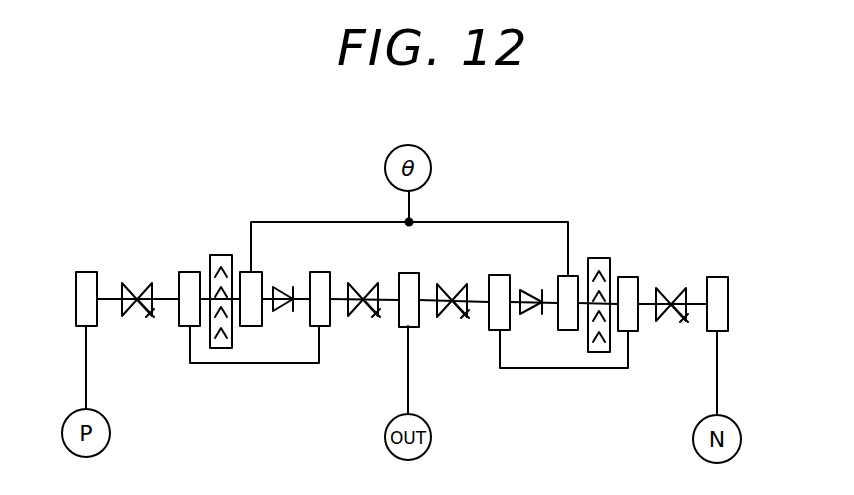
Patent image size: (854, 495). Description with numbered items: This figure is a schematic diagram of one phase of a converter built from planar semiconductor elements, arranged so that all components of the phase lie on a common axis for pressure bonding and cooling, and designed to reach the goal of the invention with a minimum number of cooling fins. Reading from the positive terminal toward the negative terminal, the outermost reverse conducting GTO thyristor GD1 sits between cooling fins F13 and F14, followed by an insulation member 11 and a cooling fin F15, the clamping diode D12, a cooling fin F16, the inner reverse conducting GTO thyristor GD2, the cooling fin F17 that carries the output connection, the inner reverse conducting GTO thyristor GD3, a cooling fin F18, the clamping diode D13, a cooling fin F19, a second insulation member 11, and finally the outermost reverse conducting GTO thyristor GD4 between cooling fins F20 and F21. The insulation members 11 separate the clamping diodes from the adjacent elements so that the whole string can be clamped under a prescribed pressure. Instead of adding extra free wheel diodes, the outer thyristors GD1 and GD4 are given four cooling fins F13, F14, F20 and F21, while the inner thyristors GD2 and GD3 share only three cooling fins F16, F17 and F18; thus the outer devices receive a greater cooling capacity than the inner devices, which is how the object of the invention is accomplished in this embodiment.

The insulation member 11 is at (222, 255).
The cooling fin F13 is at (76, 318).
The cooling fin F14 is at (181, 329).
The cooling fin F15 is at (245, 328).
The cooling fin F16 is at (327, 328).
The cooling fin F17 is at (413, 328).
The cooling fin F18 is at (497, 330).
The cooling fin F19 is at (568, 330).
The cooling fin F20 is at (632, 332).
The cooling fin F21 is at (722, 332).
The reverse conducting GTO thyristor GD1 is at (137, 283).
The reverse conducting GTO thyristor GD2 is at (362, 283).
The reverse conducting GTO thyristor GD3 is at (452, 284).
The reverse conducting GTO thyristor GD4 is at (671, 288).
The clamping diode D12 is at (284, 287).
The clamping diode D13 is at (534, 290).